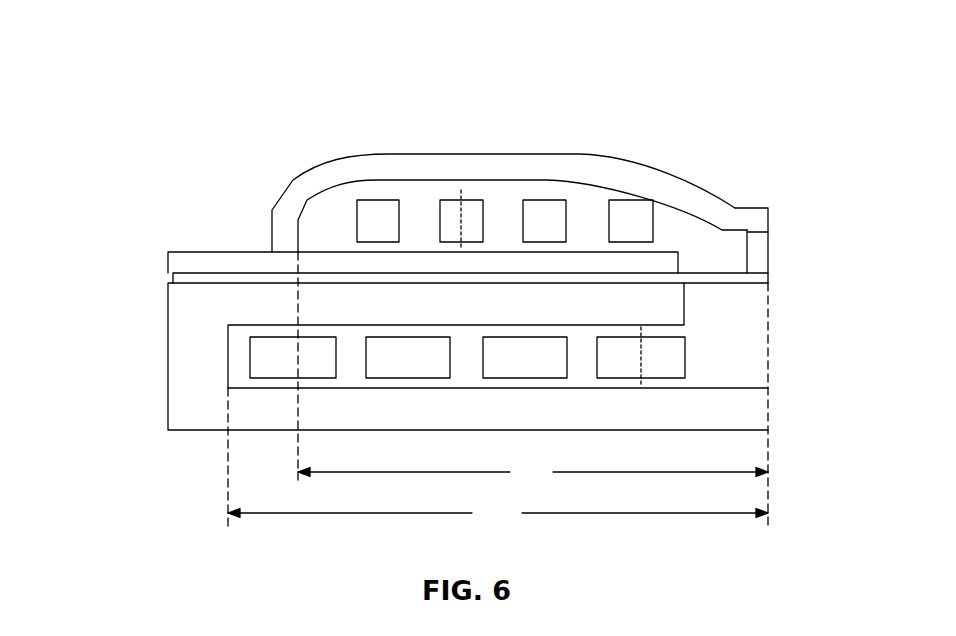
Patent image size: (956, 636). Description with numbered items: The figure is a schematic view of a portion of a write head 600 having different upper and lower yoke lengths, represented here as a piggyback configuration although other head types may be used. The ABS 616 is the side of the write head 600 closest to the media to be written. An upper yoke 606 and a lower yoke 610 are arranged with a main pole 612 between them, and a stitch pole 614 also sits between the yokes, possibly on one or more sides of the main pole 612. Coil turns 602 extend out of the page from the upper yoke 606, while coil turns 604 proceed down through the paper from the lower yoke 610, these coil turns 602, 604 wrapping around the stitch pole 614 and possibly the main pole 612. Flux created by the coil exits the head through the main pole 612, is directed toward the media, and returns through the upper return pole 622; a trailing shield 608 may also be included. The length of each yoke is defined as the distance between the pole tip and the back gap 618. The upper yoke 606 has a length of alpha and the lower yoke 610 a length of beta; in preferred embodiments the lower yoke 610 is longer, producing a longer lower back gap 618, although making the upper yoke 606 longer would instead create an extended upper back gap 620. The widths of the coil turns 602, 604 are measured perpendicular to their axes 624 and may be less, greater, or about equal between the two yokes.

The write head 600 is at (197, 98).
The coil turns 602 is at (373, 200).
The coil turns 604 is at (426, 367).
The upper yoke 606 is at (472, 132).
The trailing shield 608 is at (768, 256).
The lower yoke 610 is at (531, 418).
The main pole 612 is at (768, 277).
The stitch pole 614 is at (168, 268).
The ABS 616 is at (770, 350).
The back gap 618 is at (192, 447).
The extended upper back gap 620 is at (230, 208).
The upper return pole 622 is at (750, 208).
The axes of coil turns 624 is at (461, 220).